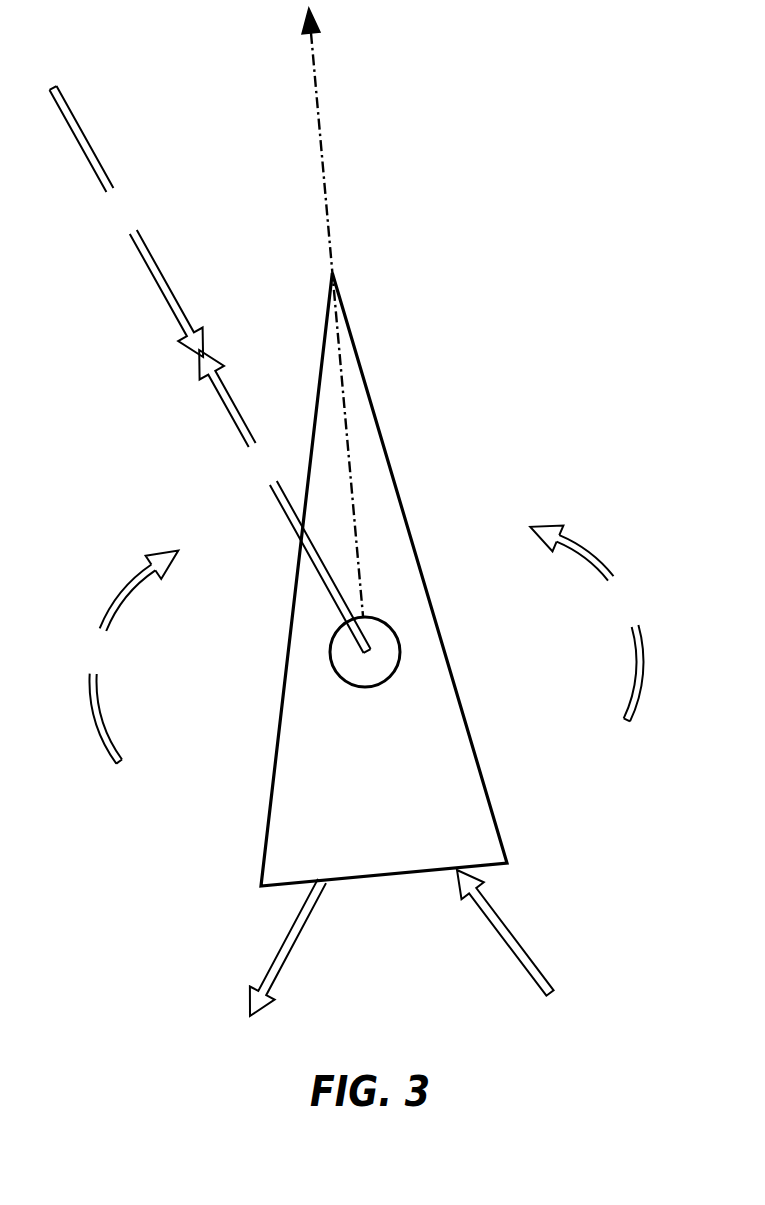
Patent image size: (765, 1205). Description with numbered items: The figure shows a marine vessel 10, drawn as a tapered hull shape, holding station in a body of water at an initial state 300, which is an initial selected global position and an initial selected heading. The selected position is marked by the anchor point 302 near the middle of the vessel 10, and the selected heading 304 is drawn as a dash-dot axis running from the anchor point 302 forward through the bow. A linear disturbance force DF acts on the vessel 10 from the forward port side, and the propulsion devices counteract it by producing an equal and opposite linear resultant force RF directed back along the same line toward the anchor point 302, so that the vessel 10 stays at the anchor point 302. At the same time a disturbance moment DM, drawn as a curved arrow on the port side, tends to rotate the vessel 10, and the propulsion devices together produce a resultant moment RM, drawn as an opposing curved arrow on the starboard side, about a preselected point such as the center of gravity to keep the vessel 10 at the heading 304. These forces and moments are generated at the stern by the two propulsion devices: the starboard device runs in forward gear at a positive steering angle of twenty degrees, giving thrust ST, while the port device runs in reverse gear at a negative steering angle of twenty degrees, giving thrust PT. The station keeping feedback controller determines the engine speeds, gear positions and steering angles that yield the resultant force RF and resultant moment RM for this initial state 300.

The vessel 10 is at (397, 489).
The initial state 300 is at (443, 236).
The anchor point 302 is at (356, 686).
The heading 304 is at (318, 97).
The disturbance force DF is at (127, 221).
The resultant force RF is at (284, 501).
The disturbance moment DM is at (129, 657).
The resultant moment RM is at (588, 624).
The port propulsion device thrust PT is at (280, 951).
The starboard propulsion device thrust ST is at (510, 932).